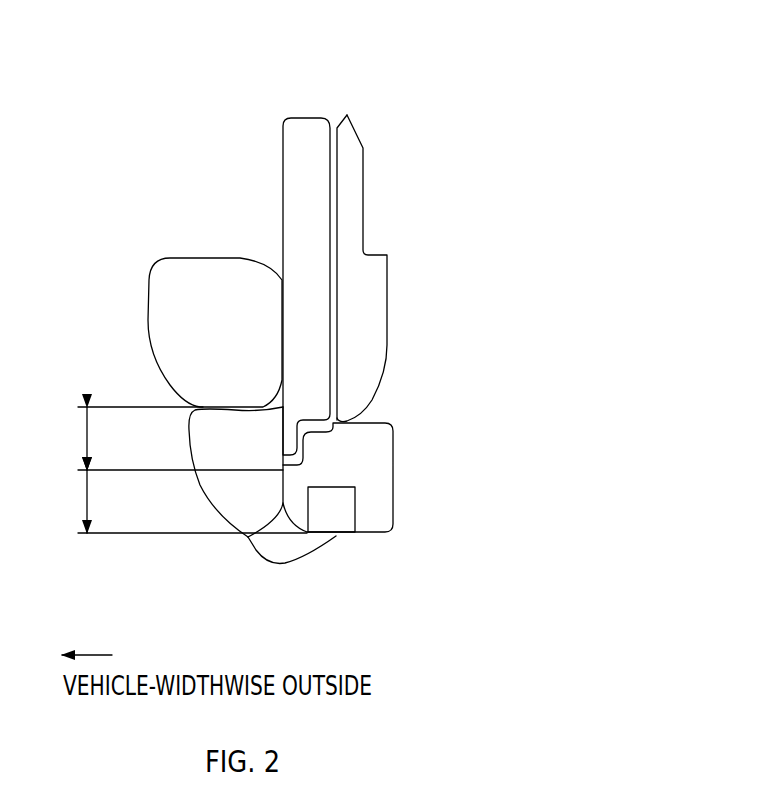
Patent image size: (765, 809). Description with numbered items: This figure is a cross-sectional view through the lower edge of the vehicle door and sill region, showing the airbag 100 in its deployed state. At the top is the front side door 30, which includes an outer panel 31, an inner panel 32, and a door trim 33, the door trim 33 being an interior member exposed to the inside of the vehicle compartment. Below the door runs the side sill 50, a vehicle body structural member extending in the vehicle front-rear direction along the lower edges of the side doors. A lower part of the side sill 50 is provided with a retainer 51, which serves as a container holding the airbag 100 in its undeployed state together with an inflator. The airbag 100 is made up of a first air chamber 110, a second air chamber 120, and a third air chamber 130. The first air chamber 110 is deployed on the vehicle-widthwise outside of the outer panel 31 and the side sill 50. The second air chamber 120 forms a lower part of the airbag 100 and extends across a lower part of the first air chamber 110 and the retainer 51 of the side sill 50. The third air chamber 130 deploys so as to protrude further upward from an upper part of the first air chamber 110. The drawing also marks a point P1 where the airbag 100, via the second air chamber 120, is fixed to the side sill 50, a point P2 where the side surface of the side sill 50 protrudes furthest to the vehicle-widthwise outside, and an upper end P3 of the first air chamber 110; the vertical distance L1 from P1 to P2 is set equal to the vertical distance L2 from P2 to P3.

The airbag 100 is at (150, 118).
The front side door 30 is at (293, 108).
The outer panel 31 is at (283, 160).
The inner panel 32 is at (328, 177).
The door trim 33 is at (365, 205).
The side sill 50 is at (390, 468).
The retainer 51 is at (355, 512).
The first air chamber 110 is at (220, 507).
The second air chamber 120 is at (258, 552).
The third air chamber 130 is at (157, 267).
The point P1 is at (338, 537).
The point P2 is at (290, 473).
The upper end P3 is at (197, 405).
The vertical distance L1 is at (174, 501).
The vertical distance L2 is at (122, 438).